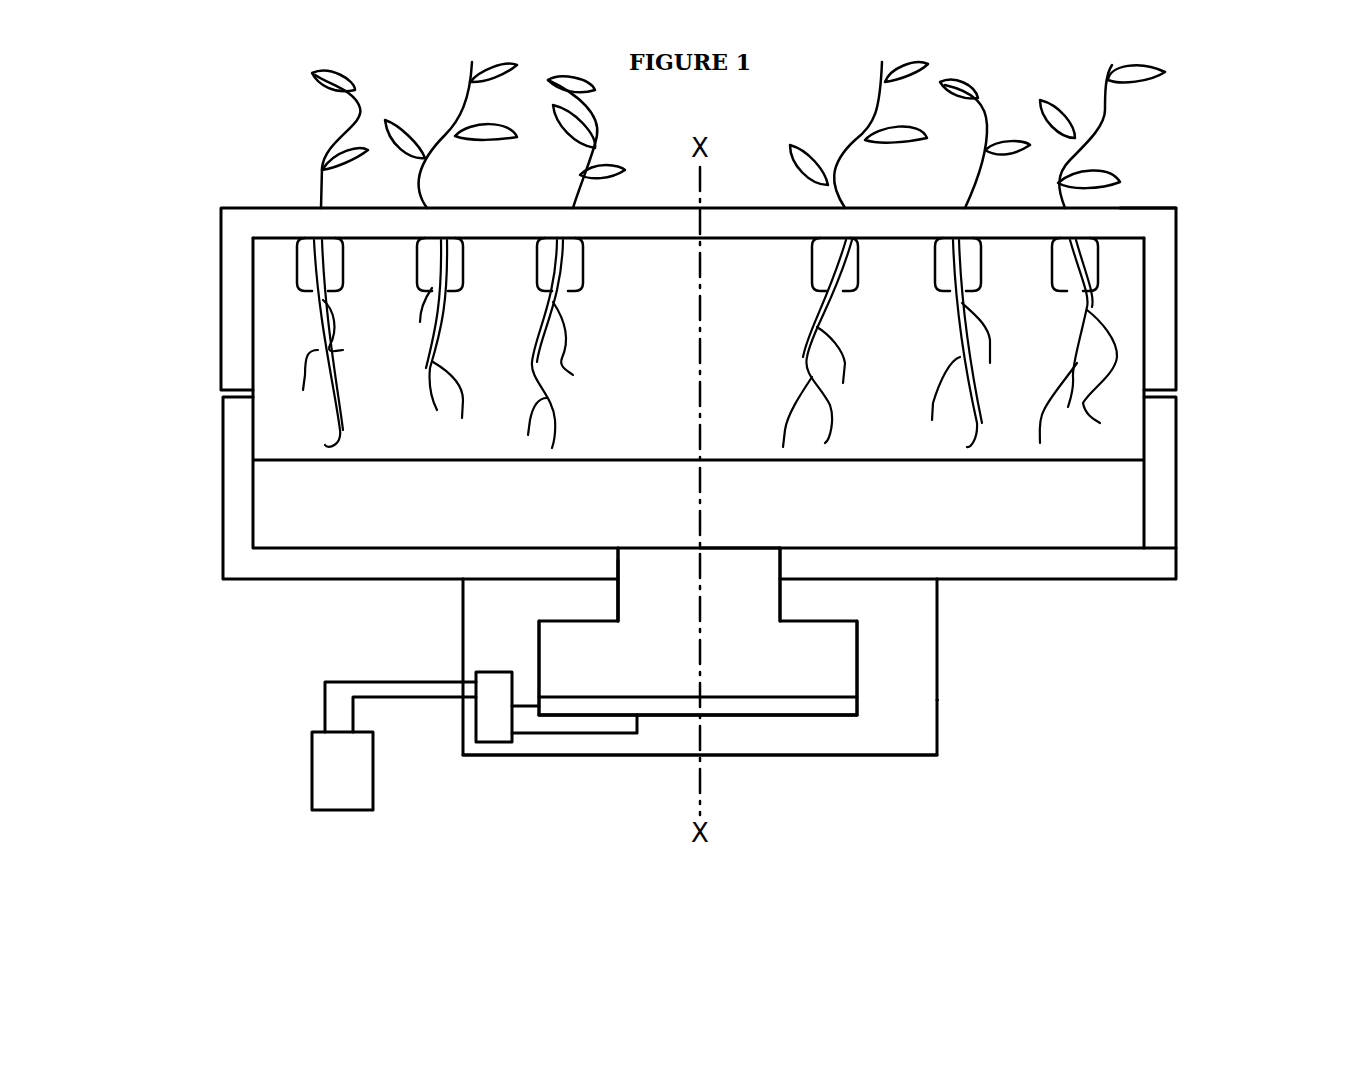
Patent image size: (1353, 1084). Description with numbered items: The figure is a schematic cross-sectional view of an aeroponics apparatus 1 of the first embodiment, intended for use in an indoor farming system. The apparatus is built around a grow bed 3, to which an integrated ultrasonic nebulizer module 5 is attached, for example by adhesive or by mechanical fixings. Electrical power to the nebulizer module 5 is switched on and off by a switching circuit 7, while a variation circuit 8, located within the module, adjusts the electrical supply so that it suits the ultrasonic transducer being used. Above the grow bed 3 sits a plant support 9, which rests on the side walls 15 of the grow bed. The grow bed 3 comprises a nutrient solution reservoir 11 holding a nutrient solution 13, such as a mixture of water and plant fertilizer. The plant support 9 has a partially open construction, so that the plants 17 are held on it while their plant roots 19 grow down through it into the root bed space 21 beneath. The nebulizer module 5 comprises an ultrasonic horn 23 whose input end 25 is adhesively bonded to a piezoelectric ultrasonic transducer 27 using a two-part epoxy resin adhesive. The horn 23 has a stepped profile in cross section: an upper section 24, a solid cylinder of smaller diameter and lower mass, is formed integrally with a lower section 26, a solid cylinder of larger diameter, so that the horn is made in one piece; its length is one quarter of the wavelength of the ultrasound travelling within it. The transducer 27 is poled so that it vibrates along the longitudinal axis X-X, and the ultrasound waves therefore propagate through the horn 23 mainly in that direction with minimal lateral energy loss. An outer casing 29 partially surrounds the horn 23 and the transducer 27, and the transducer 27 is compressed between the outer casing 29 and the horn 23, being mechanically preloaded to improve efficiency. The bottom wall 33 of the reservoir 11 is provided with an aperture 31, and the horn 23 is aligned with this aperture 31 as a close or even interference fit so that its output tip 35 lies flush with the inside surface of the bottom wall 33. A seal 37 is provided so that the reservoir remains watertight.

The aeroponics apparatus 1 is at (1140, 168).
The grow bed 3 is at (1210, 568).
The integrated ultrasonic nebulizer module 5 is at (909, 798).
The switching circuit 7 is at (312, 790).
The variation circuit 8 is at (497, 742).
The plant support 9 is at (1182, 275).
The nutrient solution reservoir 11 is at (1178, 497).
The nutrient solution 13 is at (1069, 703).
The side walls 15 is at (225, 487).
The plants 17 is at (320, 155).
The plant roots 19 is at (318, 328).
The root bed space 21 is at (1020, 372).
The ultrasonic horn 23 is at (857, 632).
The upper section 24 is at (729, 599).
The input end 25 is at (798, 699).
The lower section 26 is at (770, 654).
The piezoelectric ultrasonic transducer 27 is at (649, 717).
The outer casing 29 is at (758, 755).
The aperture 31 is at (618, 555).
The bottom wall 33 is at (1132, 579).
The output tip 35 is at (720, 547).
The seal 37 is at (618, 577).